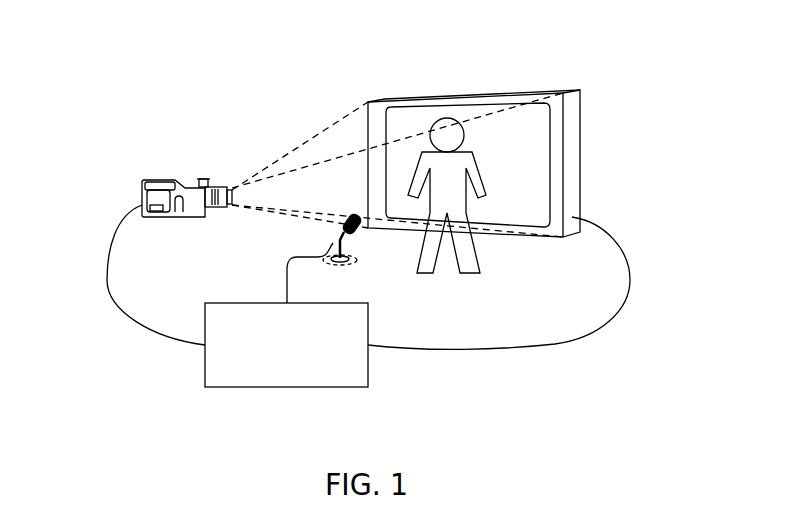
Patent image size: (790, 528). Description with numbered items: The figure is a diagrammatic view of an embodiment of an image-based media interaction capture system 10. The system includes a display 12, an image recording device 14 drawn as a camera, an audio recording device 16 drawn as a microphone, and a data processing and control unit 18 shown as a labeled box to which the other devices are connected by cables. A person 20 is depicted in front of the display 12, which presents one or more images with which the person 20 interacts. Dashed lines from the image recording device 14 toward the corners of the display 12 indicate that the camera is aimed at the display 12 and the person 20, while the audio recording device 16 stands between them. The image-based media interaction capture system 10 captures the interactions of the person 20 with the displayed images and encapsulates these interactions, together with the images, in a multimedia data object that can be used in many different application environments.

The image-based media interaction capture system 10 is at (217, 118).
The display 12 is at (572, 132).
The image recording device 14 is at (142, 187).
The audio recording device 16 is at (335, 233).
The data processing and control unit 18 is at (368, 323).
The person 20 is at (468, 162).